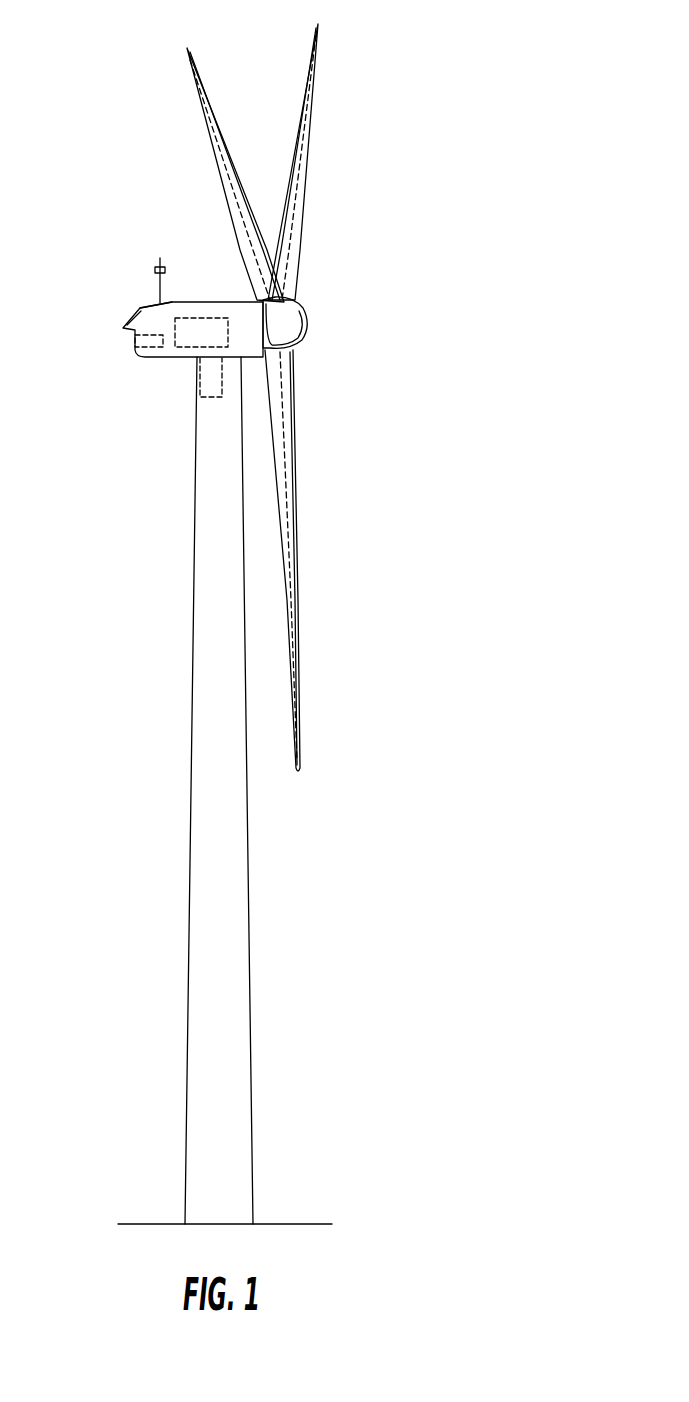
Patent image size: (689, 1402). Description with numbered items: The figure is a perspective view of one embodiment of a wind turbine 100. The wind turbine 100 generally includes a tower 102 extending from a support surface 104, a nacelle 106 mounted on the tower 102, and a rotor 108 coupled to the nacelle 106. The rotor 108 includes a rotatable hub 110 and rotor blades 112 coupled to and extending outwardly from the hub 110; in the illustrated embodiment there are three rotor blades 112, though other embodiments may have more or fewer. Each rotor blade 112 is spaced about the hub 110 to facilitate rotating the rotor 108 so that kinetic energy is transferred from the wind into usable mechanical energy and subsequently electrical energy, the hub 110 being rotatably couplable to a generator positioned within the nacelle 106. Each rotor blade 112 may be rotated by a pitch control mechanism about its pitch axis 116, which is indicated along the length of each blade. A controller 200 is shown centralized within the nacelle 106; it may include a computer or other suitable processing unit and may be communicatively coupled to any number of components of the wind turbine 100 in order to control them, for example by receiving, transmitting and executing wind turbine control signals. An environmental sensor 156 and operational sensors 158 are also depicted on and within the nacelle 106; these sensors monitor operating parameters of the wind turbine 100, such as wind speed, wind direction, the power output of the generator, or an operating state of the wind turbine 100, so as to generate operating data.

The wind turbine 100 is at (453, 130).
The tower 102 is at (230, 861).
The support surface 104 is at (292, 1224).
The nacelle 106 is at (168, 358).
The rotor 108 is at (299, 397).
The rotatable hub 110 is at (310, 322).
The rotor blade 112 is at (298, 145).
The pitch axis 116 is at (232, 195).
The environmental sensor 156 is at (157, 290).
The operational sensor 158 is at (147, 343).
The controller 200 is at (192, 317).